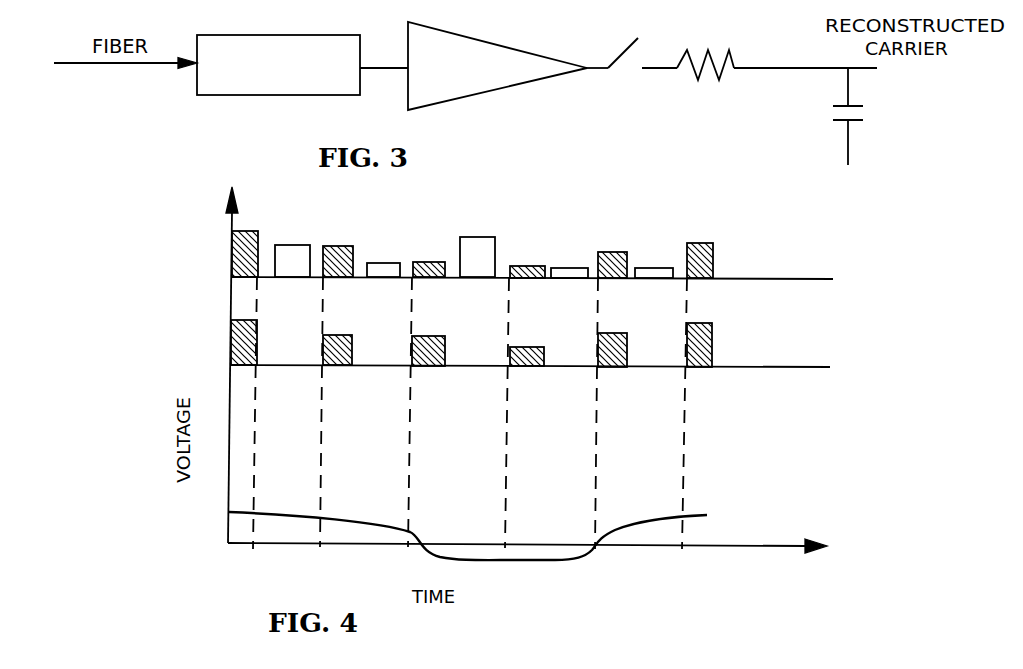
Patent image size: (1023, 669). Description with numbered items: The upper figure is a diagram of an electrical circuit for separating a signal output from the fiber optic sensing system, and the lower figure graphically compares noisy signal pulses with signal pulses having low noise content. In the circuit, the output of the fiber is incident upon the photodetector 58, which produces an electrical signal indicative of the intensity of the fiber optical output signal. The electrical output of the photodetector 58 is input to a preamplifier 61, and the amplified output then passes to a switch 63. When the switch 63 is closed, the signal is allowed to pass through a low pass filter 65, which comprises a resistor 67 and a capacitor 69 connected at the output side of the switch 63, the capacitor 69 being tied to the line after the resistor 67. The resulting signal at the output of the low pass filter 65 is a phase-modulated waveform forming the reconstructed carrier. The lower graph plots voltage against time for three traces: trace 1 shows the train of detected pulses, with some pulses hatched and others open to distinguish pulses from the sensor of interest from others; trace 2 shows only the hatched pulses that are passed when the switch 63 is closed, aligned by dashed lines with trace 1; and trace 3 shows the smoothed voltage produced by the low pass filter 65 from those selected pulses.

In FIG. 3, the photodetector 58 is at (307, 95).
In FIG. 3, the preamplifier 61 is at (452, 100).
In FIG. 3, the switch 63 is at (645, 120).
In FIG. 3, the low pass filter 65 is at (746, 44).
In FIG. 3, the resistor 67 is at (722, 78).
In FIG. 3, the capacitor 69 is at (838, 121).
In FIG. 4, the waveform 1 (detector output pulses) 1 is at (520, 255).
In FIG. 4, the waveform 2 (switched pulses) 2 is at (517, 348).
In FIG. 4, the waveform 3 (reconstructed carrier voltage) 3 is at (454, 527).